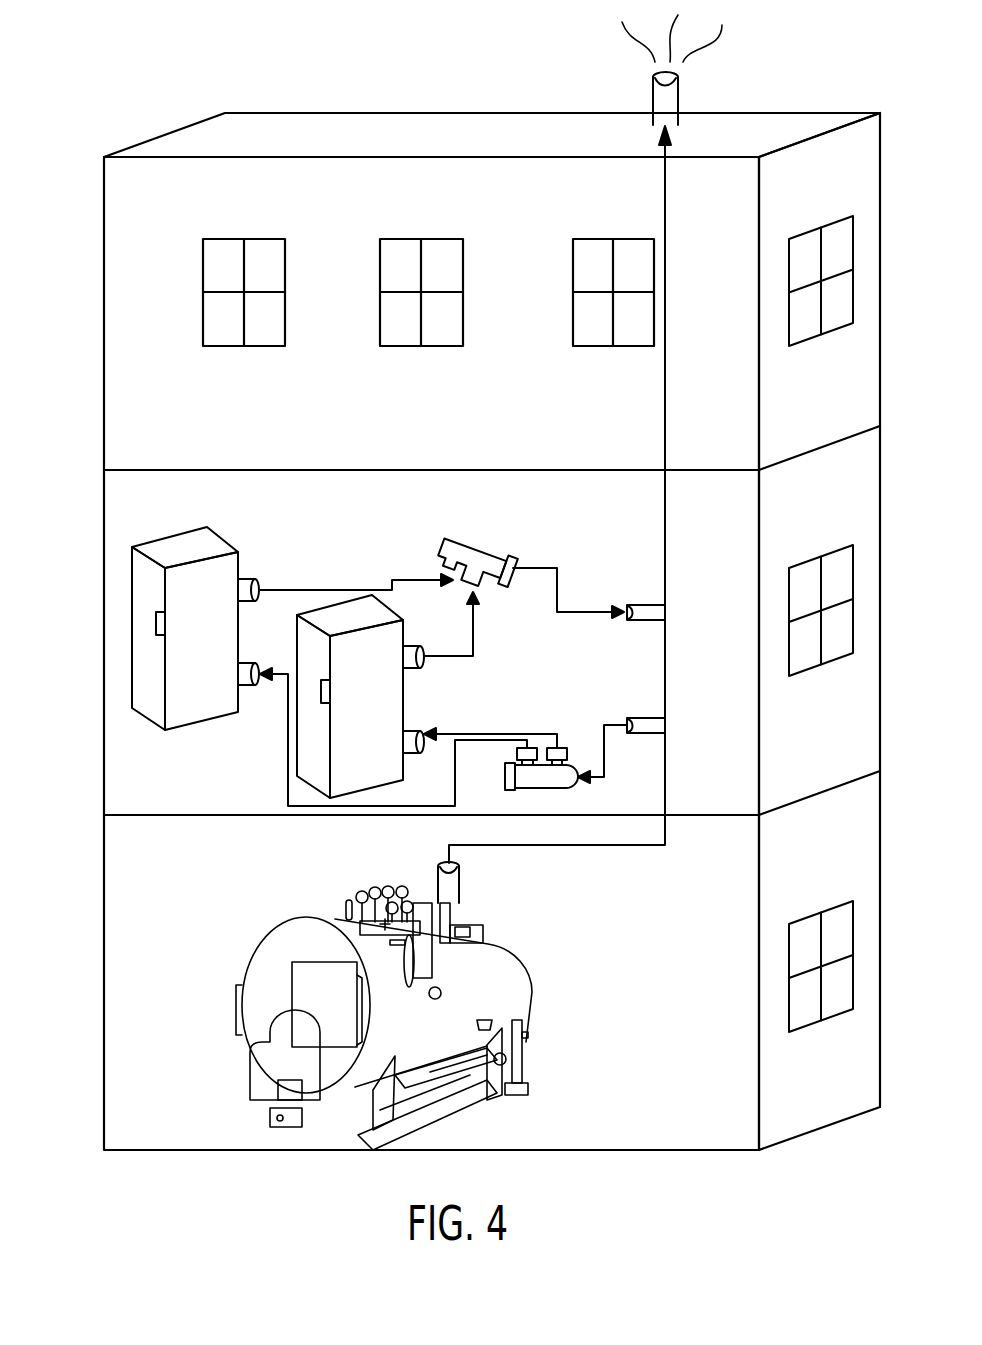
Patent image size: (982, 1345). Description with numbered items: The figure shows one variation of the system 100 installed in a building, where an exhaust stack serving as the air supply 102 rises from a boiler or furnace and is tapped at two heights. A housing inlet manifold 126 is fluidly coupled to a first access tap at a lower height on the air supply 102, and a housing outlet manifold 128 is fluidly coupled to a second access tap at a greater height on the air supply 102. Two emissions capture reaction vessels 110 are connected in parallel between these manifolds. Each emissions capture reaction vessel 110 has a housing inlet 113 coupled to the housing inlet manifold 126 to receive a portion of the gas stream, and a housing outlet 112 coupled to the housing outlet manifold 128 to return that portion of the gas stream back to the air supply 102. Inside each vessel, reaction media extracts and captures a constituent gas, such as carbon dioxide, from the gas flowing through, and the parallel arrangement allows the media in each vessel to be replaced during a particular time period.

The system 100 is at (66, 92).
The air supply 102 is at (657, 102).
The emissions capture reaction vessel 110 is at (160, 537).
The housing outlet 112 is at (252, 583).
The housing inlet 113 is at (248, 678).
The housing inlet manifold 126 is at (545, 780).
The housing outlet manifold 128 is at (480, 555).